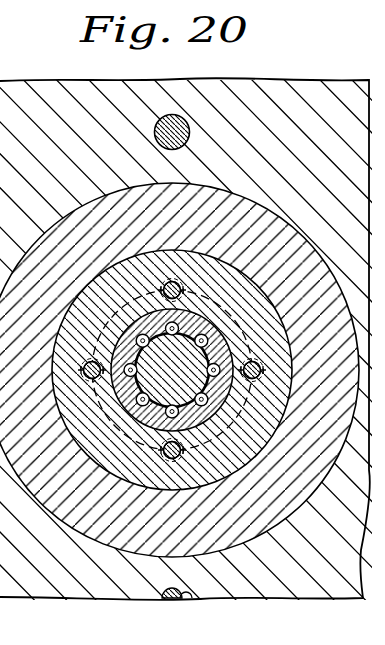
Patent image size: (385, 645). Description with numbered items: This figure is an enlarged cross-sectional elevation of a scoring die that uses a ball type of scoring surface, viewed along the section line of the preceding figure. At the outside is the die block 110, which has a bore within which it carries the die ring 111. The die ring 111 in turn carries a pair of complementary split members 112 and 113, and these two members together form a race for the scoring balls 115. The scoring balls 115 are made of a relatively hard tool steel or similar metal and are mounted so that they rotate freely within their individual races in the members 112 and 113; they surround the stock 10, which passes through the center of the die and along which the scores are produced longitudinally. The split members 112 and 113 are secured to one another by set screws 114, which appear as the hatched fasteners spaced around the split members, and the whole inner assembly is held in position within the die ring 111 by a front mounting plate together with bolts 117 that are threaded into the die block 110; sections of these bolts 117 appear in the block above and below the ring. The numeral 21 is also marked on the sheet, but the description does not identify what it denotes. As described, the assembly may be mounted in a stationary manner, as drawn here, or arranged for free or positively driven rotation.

The stock 10 is at (192, 354).
The housing part 21 is at (33, 637).
The die block 110 is at (335, 587).
The die ring 111 is at (252, 518).
The split member 112 is at (202, 262).
The split member 113 is at (192, 415).
The set screw 114 is at (167, 458).
The scoring ball 115 is at (200, 342).
The bolt 117 is at (157, 125).